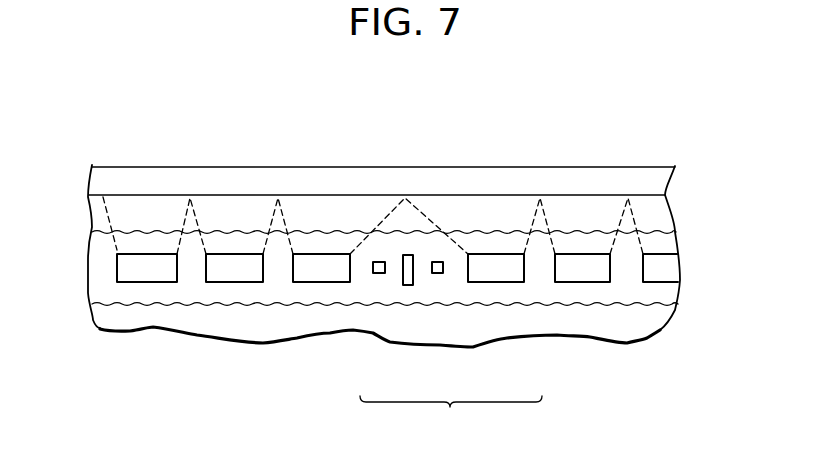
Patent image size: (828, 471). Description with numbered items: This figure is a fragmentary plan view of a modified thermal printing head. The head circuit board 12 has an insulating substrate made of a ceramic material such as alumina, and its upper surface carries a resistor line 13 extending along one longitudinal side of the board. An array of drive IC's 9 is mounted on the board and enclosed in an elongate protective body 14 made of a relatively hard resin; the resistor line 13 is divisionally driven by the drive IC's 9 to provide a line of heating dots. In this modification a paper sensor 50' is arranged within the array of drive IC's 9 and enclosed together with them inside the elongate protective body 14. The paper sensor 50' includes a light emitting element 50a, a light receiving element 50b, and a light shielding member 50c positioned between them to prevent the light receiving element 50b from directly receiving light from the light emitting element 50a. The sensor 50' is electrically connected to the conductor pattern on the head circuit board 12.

The drive IC 9 is at (317, 266).
The head circuit board 12 is at (593, 343).
The resistor line 13 is at (507, 195).
The elongate protective body 14 is at (193, 247).
The light emitting element 50a is at (380, 273).
The light receiving element 50b is at (438, 273).
The light shielding member 50c is at (408, 285).
The paper sensor 50' is at (451, 421).